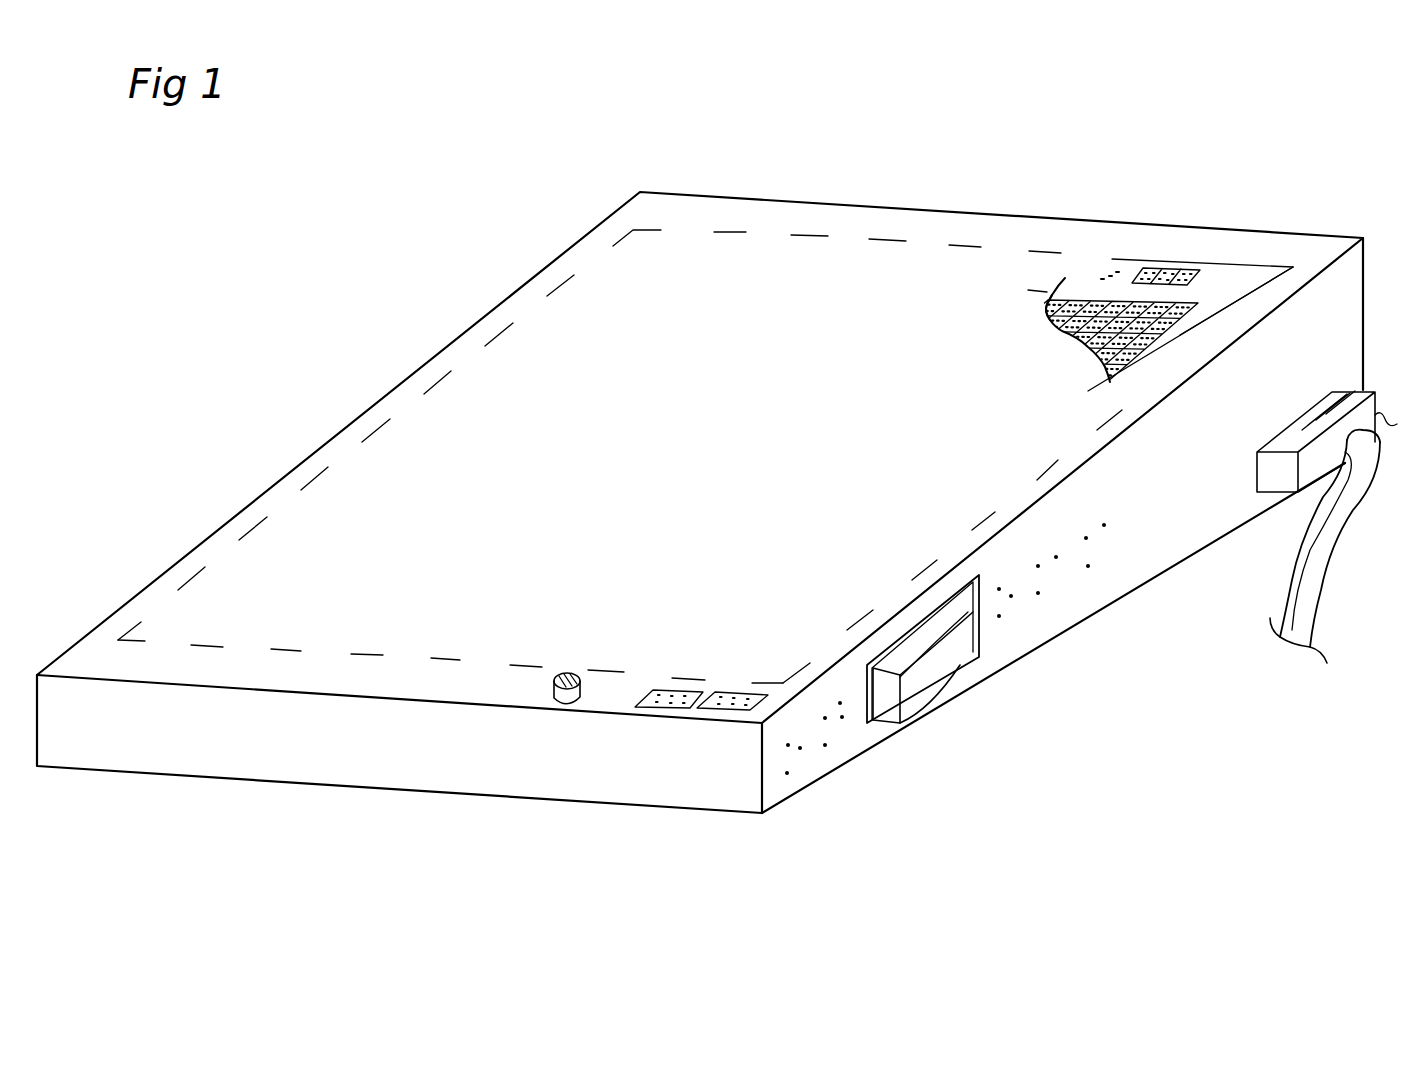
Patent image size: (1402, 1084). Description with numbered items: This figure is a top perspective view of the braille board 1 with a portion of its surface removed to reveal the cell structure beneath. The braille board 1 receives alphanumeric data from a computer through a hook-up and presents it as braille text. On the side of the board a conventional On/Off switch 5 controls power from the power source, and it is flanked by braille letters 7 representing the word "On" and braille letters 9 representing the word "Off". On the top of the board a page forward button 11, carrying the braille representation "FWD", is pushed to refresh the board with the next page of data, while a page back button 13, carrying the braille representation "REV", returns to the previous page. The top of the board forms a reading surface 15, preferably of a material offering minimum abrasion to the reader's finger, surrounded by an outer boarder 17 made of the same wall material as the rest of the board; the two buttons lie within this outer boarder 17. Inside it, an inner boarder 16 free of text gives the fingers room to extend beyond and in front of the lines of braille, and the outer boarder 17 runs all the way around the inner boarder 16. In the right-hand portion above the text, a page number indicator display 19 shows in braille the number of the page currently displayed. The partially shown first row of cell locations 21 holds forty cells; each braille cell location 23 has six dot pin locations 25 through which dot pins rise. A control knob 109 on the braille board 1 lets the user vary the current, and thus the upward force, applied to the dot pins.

The braille board 1 is at (1087, 653).
The On/Off switch 5 is at (953, 667).
The braille letters 7 is at (812, 754).
The braille letters 9 is at (1073, 578).
The page forward button 11 is at (732, 685).
The page back button 13 is at (665, 688).
The reading surface 15 is at (1260, 280).
The inner boarder 16 is at (1112, 257).
The outer boarder 17 is at (1340, 250).
The page number indicator display 19 is at (1193, 280).
The first row of cell locations 21 is at (1182, 315).
The braille cell location 23 is at (1057, 334).
The dot pin locations 25 is at (1047, 306).
The control knob 109 is at (580, 688).